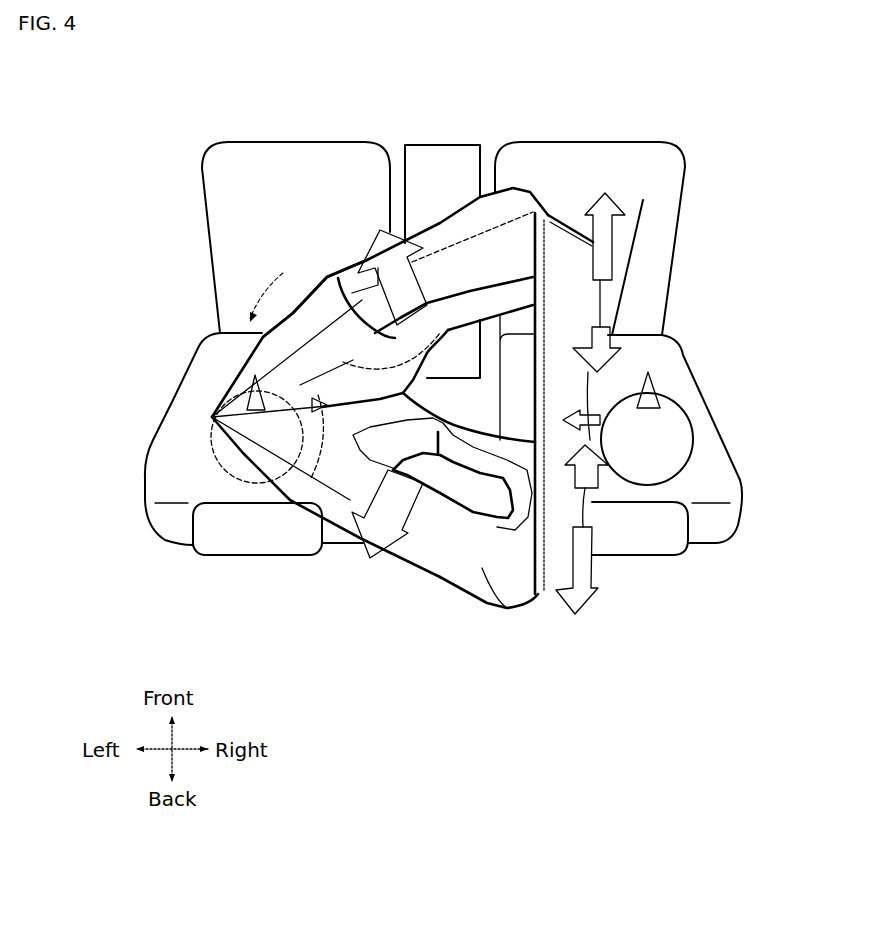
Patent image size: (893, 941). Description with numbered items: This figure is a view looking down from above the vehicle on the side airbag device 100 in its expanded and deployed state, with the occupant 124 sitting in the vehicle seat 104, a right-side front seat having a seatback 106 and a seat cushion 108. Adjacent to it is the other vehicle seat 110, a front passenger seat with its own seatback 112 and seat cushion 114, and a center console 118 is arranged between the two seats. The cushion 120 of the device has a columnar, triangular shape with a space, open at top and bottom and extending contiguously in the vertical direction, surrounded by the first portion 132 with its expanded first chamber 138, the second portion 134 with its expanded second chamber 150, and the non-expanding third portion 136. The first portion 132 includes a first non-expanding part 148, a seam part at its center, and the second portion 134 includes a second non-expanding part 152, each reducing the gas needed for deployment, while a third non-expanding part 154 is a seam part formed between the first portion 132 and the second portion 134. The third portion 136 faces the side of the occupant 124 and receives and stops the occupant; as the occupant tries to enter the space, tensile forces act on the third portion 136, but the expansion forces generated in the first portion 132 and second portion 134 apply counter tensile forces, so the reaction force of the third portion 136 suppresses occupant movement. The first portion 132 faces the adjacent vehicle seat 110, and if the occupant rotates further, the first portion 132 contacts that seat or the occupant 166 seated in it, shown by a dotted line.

The side airbag device 100 is at (512, 176).
The vehicle seat 104 is at (627, 138).
The seatback 106 is at (517, 400).
The seat cushion 108 is at (668, 205).
The vehicle seat 110 is at (262, 138).
The seatback 112 is at (205, 381).
The seat cushion 114 is at (220, 231).
The center console 118 is at (437, 163).
The cushion 120 is at (505, 618).
The occupant 124 is at (680, 433).
The first portion 132 is at (336, 514).
The second portion 134 is at (311, 300).
The third portion 136 is at (592, 296).
The first chamber 138 is at (482, 568).
The first non-expanding part 148 is at (446, 372).
The second chamber 150 is at (470, 212).
The second non-expanding part 152 is at (345, 282).
The third non-expanding part 154 is at (287, 472).
The occupant 166 is at (210, 455).